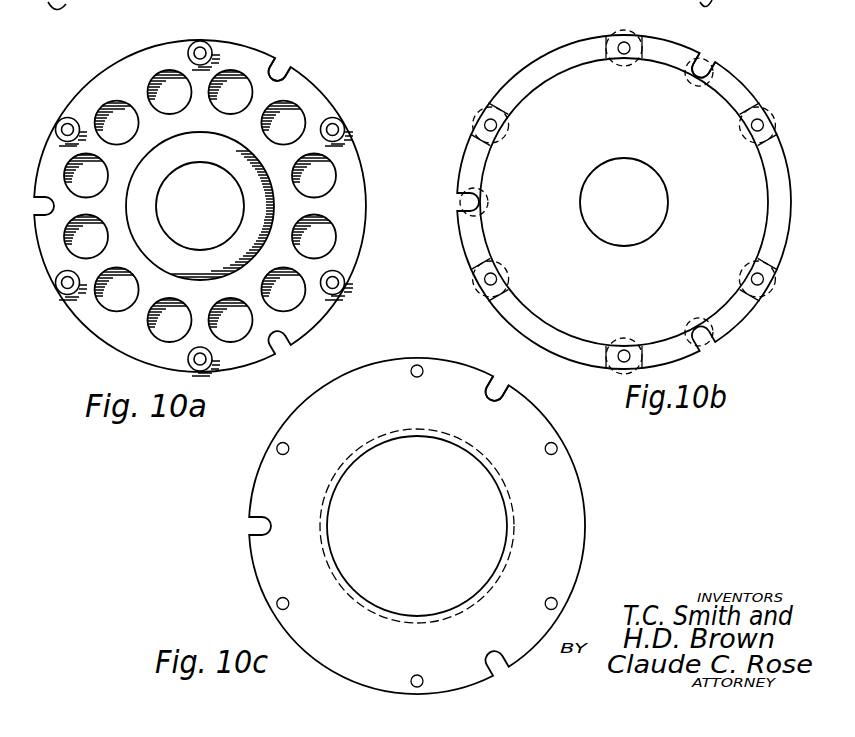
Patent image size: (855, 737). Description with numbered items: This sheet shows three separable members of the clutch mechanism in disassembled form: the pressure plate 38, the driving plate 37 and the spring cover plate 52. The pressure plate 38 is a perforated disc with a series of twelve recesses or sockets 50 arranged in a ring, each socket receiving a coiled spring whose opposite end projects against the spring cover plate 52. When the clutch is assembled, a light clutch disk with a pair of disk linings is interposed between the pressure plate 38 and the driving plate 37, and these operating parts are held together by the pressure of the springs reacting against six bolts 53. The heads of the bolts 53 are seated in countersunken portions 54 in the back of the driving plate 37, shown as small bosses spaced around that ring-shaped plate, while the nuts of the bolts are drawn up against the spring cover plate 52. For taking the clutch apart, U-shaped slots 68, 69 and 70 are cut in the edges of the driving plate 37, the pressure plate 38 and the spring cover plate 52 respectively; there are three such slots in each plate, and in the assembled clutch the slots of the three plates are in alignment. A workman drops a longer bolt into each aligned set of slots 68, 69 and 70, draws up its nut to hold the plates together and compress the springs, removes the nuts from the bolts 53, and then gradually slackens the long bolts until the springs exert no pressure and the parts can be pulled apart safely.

In FIG. 10A, the pressure plate 38 is at (318, 92).
In FIG. 10A, the bolts 53 is at (198, 46).
In FIG. 10A, the U-shaped slot 69 is at (274, 70).
In FIG. 10A, the recesses or sockets 50 is at (314, 176).
In FIG. 10B, the driving plate 37 is at (524, 68).
In FIG. 10B, the U-shaped slot 68 is at (694, 77).
In FIG. 10B, the countersunken portions 54 is at (759, 118).
In FIG. 10C, the spring cover plate 52 is at (252, 492).
In FIG. 10C, the U-shaped slot 70 is at (492, 393).